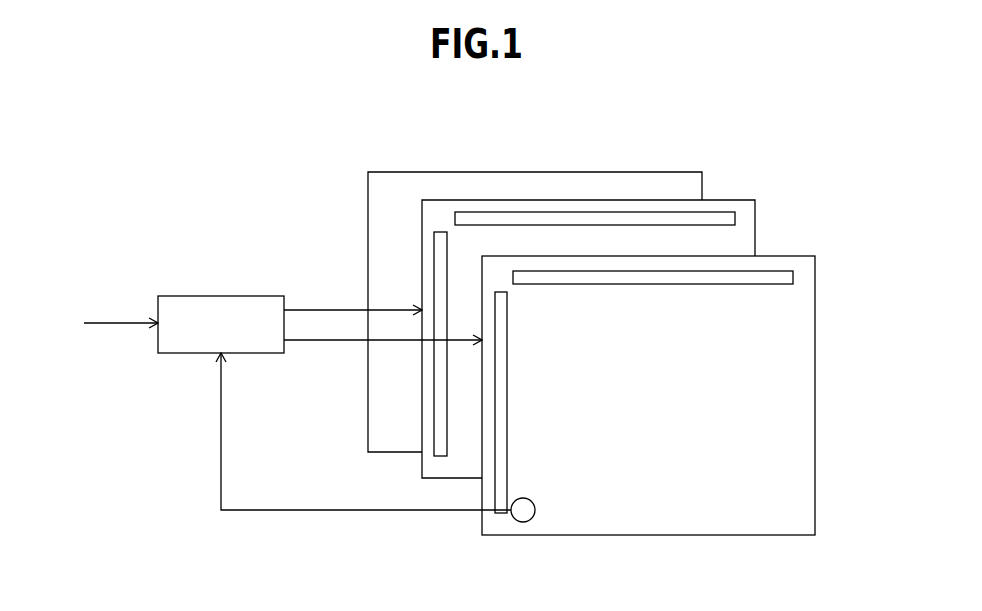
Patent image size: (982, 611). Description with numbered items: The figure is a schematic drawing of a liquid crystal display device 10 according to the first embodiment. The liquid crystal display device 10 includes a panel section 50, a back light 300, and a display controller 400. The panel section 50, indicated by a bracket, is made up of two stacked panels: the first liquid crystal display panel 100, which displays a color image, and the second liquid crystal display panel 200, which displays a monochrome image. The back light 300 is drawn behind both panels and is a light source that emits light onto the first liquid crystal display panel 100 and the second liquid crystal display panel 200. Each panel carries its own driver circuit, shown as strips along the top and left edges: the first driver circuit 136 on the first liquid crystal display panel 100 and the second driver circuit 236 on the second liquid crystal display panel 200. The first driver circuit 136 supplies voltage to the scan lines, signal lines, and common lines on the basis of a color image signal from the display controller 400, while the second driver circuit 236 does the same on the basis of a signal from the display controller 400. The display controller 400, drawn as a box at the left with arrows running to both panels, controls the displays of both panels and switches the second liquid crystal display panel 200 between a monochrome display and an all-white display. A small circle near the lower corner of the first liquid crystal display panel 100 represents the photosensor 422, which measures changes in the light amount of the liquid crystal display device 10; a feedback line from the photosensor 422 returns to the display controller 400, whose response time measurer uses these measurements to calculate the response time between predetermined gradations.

The liquid crystal display device 10 is at (186, 141).
The panel section 50 is at (747, 118).
The first liquid crystal display panel 100 is at (811, 244).
The first driver circuit 136 is at (779, 271).
The second liquid crystal display panel 200 is at (745, 190).
The second driver circuit 236 is at (440, 232).
The back light 300 is at (390, 172).
The display controller 400 is at (266, 296).
The photosensor 422 is at (533, 519).